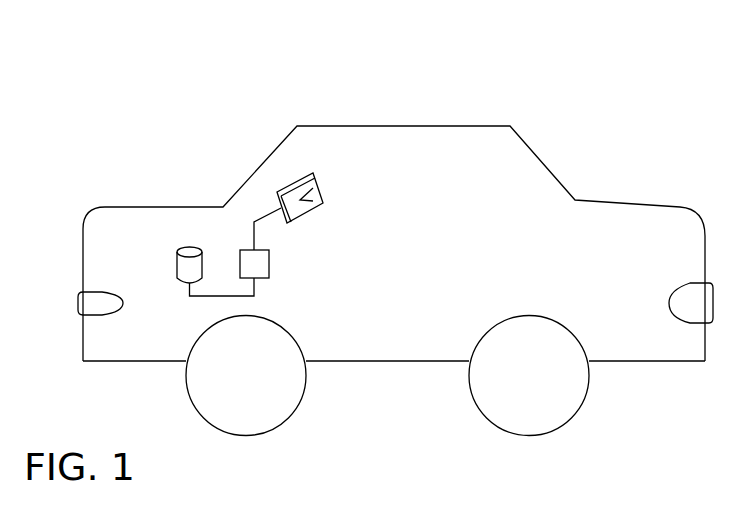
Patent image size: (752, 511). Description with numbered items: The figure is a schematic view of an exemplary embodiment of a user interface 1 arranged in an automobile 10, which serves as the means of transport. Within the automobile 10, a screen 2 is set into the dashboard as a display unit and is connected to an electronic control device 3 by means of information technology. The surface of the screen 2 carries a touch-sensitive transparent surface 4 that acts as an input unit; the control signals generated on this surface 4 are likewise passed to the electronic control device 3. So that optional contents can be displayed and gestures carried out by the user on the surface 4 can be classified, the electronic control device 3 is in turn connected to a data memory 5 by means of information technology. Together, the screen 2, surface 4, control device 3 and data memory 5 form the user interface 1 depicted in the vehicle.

The user interface 1 is at (162, 88).
The screen 2 is at (298, 180).
The electronic control device 3 is at (247, 251).
The touch-sensitive transparent surface 4 is at (318, 173).
The data memory 5 is at (185, 246).
The automobile 10 is at (541, 162).